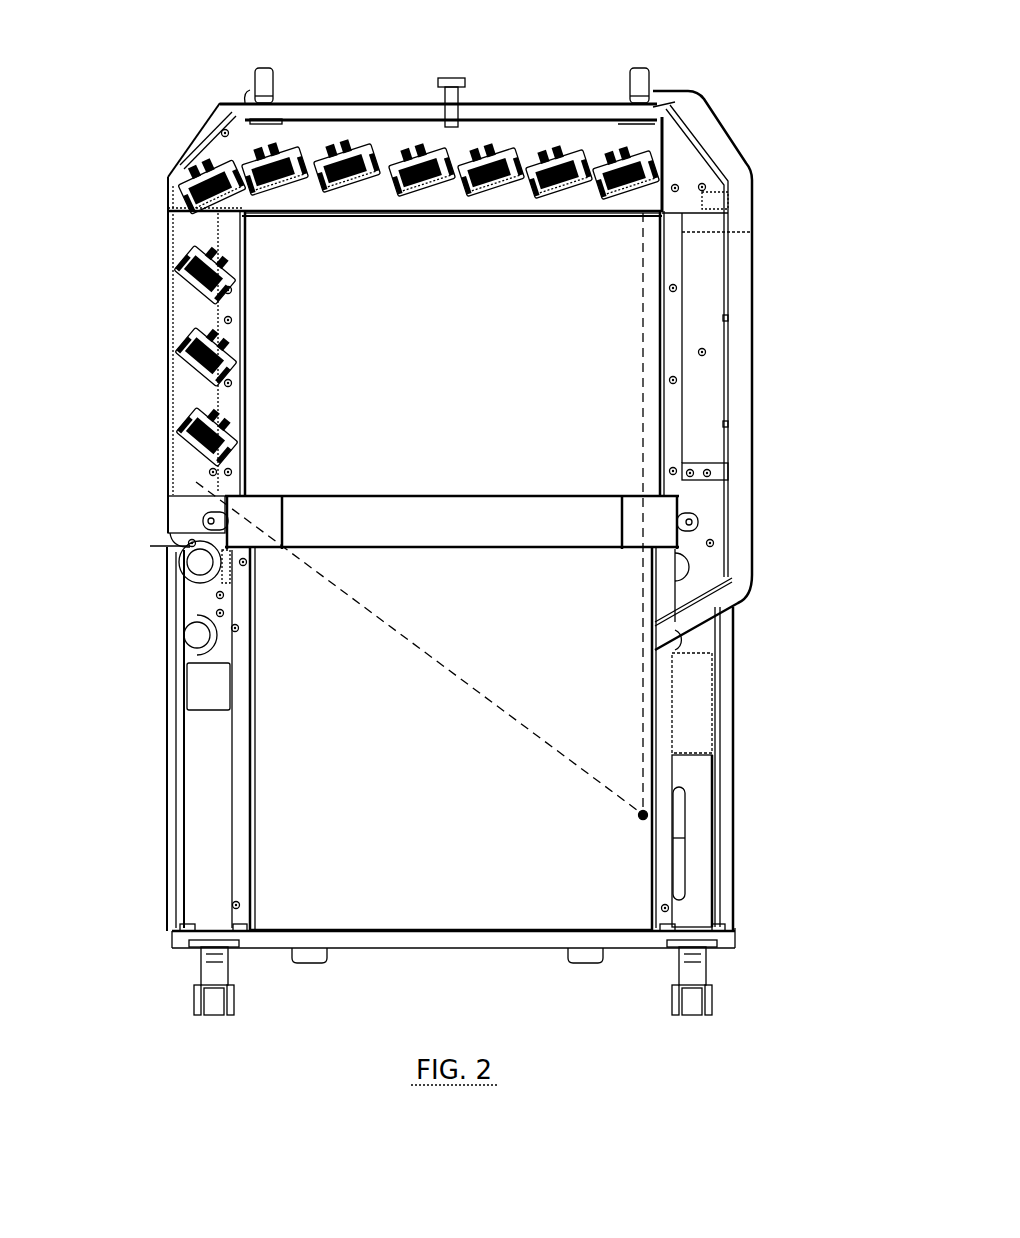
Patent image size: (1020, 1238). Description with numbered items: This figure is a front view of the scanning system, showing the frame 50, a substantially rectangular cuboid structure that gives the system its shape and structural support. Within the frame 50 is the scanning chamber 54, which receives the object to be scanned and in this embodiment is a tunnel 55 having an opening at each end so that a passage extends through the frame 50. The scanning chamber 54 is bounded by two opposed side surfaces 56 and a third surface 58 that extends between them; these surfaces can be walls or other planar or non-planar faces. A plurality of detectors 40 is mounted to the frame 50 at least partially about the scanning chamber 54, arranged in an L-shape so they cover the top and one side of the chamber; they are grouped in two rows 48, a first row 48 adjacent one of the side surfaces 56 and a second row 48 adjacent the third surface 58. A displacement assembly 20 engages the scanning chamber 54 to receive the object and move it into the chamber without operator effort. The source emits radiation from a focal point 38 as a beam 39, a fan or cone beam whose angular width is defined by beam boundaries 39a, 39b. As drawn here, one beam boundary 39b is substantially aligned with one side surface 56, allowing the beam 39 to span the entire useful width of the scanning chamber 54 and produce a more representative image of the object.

The frame 50 is at (764, 78).
The rows of detectors 48 is at (396, 128).
The third surface 58 is at (517, 216).
The detectors 40 is at (357, 150).
The scanning chamber 54 is at (452, 354).
The tunnel 55 is at (470, 364).
The side surfaces 56 is at (246, 325).
The displacement assembly 20 is at (700, 495).
The beam 39 is at (419, 513).
The beam boundary 39a is at (640, 574).
The beam boundary 39b is at (372, 612).
The focal point 38 is at (641, 818).